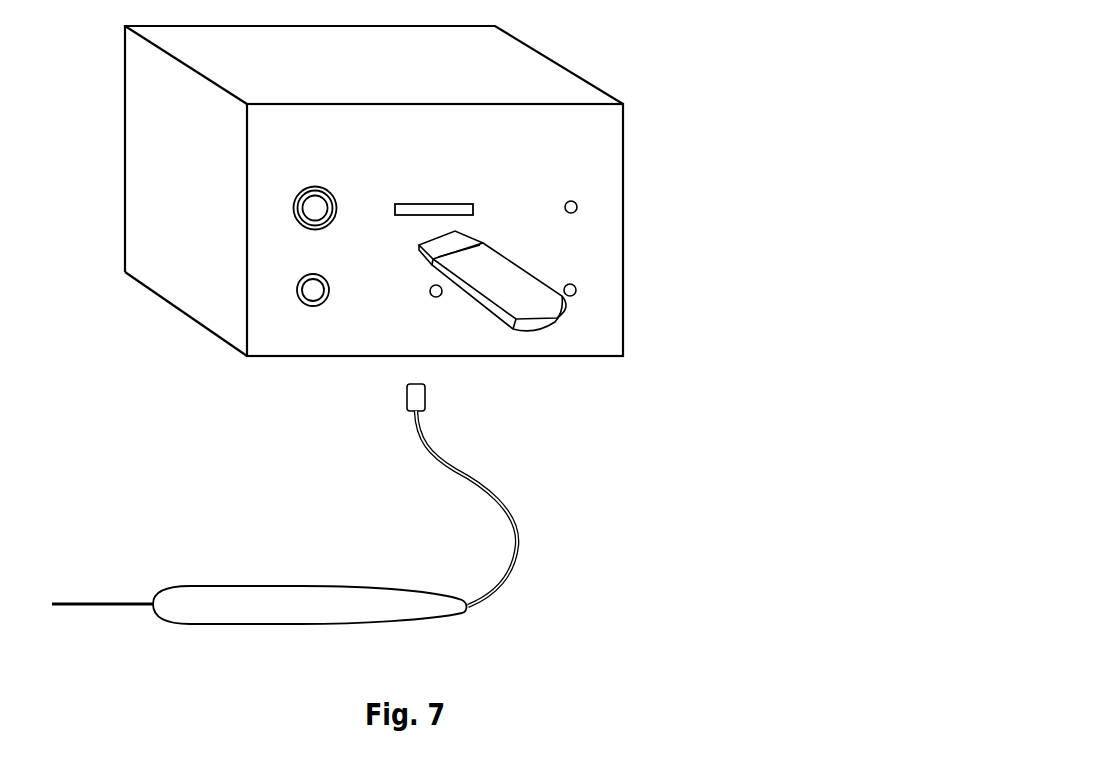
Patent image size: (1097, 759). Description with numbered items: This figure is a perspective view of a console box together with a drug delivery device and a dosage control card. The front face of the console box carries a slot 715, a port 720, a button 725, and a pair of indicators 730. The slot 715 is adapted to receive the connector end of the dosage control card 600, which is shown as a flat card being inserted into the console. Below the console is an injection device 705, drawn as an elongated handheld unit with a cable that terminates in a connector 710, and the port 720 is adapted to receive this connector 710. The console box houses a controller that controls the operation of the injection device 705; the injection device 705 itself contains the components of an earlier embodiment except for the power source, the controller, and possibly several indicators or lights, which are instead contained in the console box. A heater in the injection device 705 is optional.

The dosage control card 600 is at (531, 300).
The injection device 705 is at (275, 558).
The connector 710 is at (430, 397).
The slot 715 is at (443, 206).
The port 720 is at (300, 302).
The button 725 is at (296, 216).
The indicators 730 is at (581, 208).